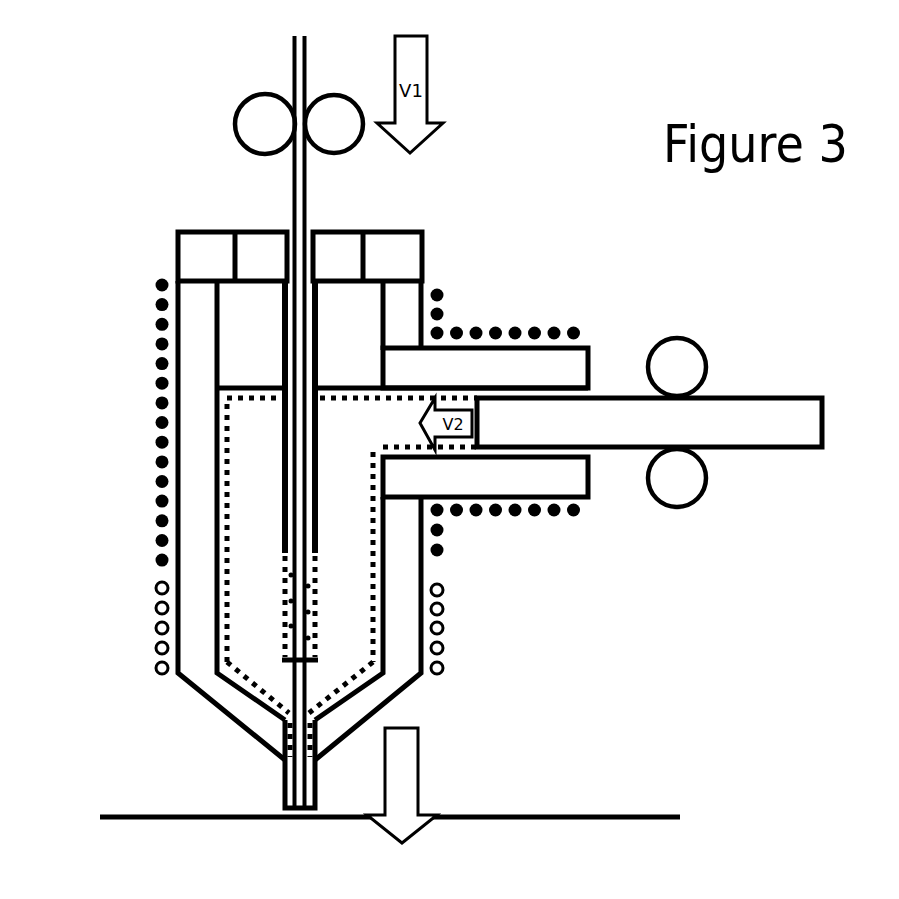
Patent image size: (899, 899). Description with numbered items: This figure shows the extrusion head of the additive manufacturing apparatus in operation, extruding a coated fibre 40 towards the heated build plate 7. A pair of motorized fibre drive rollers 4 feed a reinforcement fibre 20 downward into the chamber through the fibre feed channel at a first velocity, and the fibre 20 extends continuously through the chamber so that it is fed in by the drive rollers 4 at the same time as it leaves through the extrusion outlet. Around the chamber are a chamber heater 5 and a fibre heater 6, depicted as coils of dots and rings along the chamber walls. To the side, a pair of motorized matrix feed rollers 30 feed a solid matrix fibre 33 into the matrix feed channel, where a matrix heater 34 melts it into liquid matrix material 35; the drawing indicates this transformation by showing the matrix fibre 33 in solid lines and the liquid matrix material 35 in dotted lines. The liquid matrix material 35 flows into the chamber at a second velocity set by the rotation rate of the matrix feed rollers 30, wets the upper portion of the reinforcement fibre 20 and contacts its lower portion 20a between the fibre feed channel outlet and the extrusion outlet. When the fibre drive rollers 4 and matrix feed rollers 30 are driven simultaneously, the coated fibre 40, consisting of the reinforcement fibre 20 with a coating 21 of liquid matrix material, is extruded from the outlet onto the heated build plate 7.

The fibre drive rollers 4 is at (235, 135).
The reinforcement fibre 20 is at (307, 202).
The lower portion of the reinforcement fibre 20a is at (307, 690).
The coating 21 is at (283, 795).
The chamber heater 5 is at (158, 442).
The fibre heater 6 is at (160, 628).
The heated build plate 7 is at (133, 818).
The matrix feed rollers 30 is at (673, 338).
The matrix fibre 33 is at (775, 395).
The matrix heater 34 is at (495, 332).
The liquid matrix material 35 is at (410, 422).
The coated fibre 40 is at (262, 777).